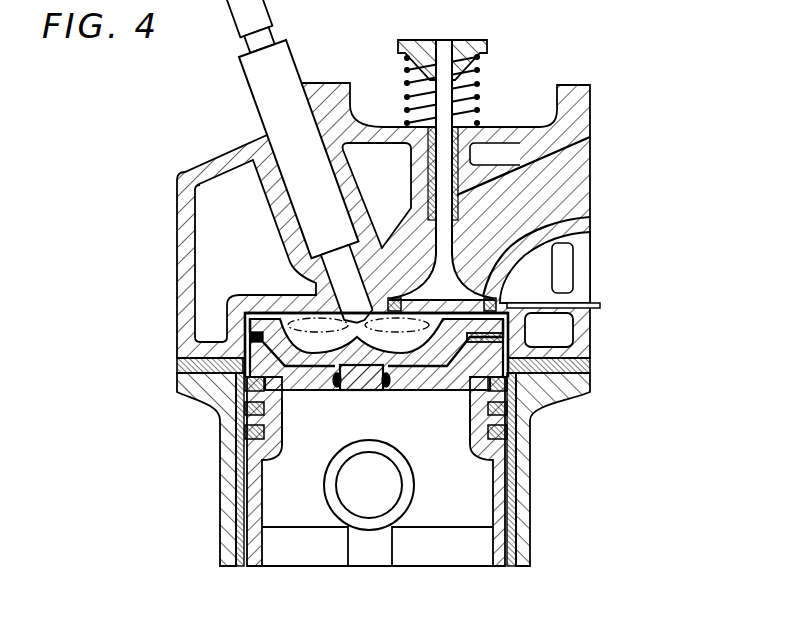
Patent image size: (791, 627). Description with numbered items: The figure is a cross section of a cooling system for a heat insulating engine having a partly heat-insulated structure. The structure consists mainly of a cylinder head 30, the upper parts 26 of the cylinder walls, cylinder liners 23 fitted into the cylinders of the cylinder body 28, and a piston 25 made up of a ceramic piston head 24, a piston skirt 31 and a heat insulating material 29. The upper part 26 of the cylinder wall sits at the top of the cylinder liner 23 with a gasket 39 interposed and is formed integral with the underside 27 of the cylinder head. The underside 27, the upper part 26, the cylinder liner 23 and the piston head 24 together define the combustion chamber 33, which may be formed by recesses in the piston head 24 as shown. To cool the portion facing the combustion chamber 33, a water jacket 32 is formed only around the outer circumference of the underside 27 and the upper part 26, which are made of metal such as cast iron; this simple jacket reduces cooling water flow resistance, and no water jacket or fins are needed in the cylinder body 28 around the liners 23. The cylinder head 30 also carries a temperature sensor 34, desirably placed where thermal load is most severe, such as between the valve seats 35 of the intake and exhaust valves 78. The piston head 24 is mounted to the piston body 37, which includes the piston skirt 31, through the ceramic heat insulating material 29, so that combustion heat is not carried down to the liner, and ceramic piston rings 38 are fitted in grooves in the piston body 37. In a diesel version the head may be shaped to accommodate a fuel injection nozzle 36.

The cylinder liner 23 is at (238, 493).
The piston head 24 is at (312, 362).
The piston 25 is at (308, 467).
The upper part of cylinder wall 26 is at (237, 323).
The underside of cylinder head 27 is at (293, 305).
The cylinder body 28 is at (228, 537).
The heat insulating material 29 is at (424, 380).
The cylinder head 30 is at (183, 260).
The piston skirt 31 is at (250, 507).
The water jacket 32 is at (212, 334).
The combustion chamber 33 is at (402, 345).
The temperature sensor 34 is at (575, 303).
The valve seat 35 is at (393, 296).
The fuel injection nozzle 36 is at (277, 97).
The piston body 37 is at (470, 373).
The piston rings 38 is at (247, 432).
The gasket 39 is at (178, 367).
The intake and exhaust valves 78 is at (443, 275).